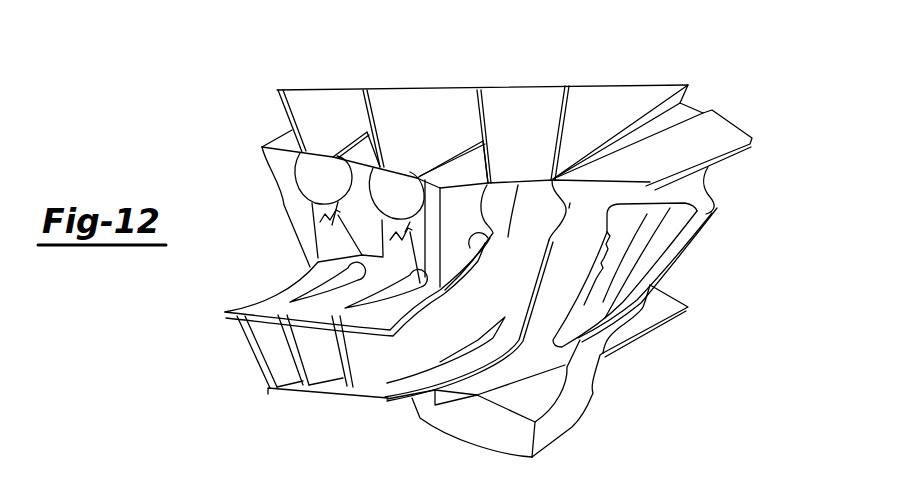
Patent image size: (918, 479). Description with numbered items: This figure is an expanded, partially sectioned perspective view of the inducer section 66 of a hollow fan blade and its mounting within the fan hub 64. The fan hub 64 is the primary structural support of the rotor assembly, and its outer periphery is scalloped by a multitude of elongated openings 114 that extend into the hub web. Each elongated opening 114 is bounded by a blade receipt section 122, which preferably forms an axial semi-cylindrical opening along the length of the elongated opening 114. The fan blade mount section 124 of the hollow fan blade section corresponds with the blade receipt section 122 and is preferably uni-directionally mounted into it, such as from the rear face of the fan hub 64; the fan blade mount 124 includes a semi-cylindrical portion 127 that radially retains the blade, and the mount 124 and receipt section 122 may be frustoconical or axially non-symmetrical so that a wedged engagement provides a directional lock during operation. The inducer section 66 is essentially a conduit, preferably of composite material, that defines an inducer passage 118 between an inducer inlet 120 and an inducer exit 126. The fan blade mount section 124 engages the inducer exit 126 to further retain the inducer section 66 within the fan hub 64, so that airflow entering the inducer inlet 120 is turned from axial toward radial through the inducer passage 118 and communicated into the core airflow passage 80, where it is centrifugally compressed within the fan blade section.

The fan hub 64 is at (267, 212).
The inducer section 66 is at (387, 398).
The core airflow passage 80 is at (519, 96).
The elongated opening 114 is at (730, 151).
The inducer passage 118 is at (462, 343).
The inducer inlet 120 is at (370, 368).
The blade receipt section 122 is at (718, 127).
The fan blade mount section 124 is at (696, 191).
The inducer exit 126 is at (508, 237).
The semi-cylindrical portion 127 is at (570, 203).